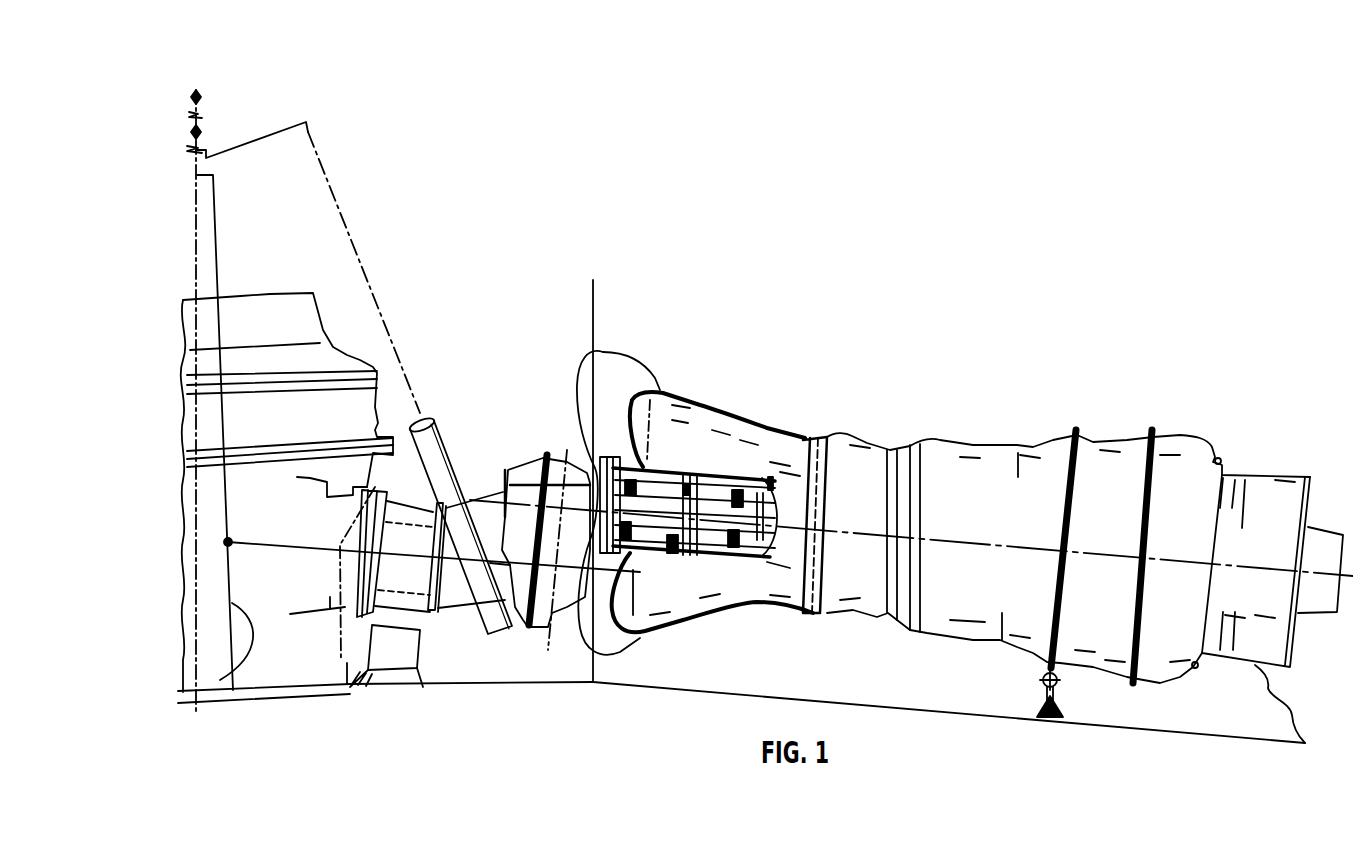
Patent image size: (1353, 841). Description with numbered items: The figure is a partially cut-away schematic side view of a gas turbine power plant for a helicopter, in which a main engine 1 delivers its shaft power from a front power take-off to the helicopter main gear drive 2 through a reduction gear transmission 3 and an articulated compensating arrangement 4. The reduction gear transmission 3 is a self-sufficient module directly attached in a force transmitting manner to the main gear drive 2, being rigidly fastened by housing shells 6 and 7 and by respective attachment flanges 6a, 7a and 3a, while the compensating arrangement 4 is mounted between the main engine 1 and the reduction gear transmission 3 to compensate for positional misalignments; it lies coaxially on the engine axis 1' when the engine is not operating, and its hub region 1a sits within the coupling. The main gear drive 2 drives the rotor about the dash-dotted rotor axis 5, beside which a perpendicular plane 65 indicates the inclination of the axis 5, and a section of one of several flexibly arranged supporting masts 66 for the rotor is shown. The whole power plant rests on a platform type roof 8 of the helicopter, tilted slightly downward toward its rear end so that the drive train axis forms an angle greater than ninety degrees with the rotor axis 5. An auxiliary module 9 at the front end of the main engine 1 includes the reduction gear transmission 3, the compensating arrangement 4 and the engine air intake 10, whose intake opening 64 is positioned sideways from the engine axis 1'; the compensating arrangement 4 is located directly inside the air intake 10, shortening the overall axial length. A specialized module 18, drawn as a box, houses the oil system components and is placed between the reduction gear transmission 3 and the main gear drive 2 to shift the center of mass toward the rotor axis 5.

The main engine 1 is at (1073, 593).
The axis of the main engine 1' is at (911, 534).
The coupling hub 1a is at (617, 463).
The helicopter main gear drive 2 is at (302, 578).
The reduction gear transmission 3 is at (534, 675).
The attachment flange 3a is at (547, 456).
The articulated compensating arrangement 4 is at (720, 468).
The axis of the helicopter rotor 5 is at (222, 683).
The housing shell 6 is at (460, 598).
The attachment flange 6a is at (440, 613).
The housing shell 7 is at (400, 597).
The attachment flange 7a is at (377, 493).
The platform type roof 8 is at (700, 686).
The auxiliary module 9 is at (741, 622).
The engine air intake 10 is at (672, 423).
The specialized module 18 is at (408, 660).
The intake opening 64 is at (637, 353).
The perpendicular plane 65 is at (212, 238).
The supporting mast 66 is at (440, 443).